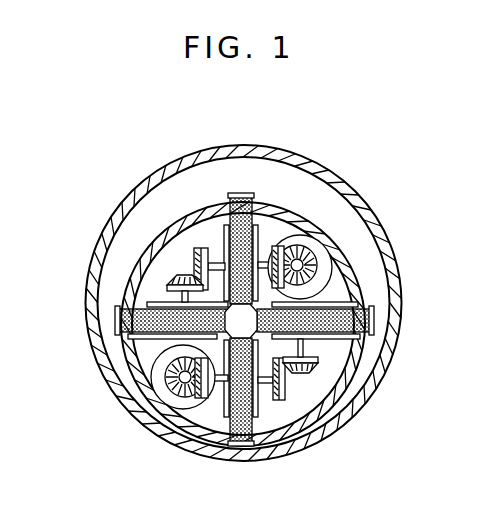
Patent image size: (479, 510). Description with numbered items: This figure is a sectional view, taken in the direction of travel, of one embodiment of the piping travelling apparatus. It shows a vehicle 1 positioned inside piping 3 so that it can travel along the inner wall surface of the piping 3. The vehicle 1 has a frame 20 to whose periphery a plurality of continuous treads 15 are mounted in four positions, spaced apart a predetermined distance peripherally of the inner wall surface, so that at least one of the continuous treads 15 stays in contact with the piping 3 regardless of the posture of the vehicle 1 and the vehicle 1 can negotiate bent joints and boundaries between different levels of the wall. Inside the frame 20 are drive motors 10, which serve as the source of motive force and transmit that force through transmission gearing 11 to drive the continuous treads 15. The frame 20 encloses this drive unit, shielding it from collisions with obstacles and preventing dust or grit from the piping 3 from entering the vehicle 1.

The vehicle 1 is at (135, 370).
The piping 3 is at (167, 175).
The frame 20 is at (142, 253).
The continuous treads 15 is at (243, 193).
The transmission gearing 11 is at (283, 247).
The drive motors 10 is at (315, 253).